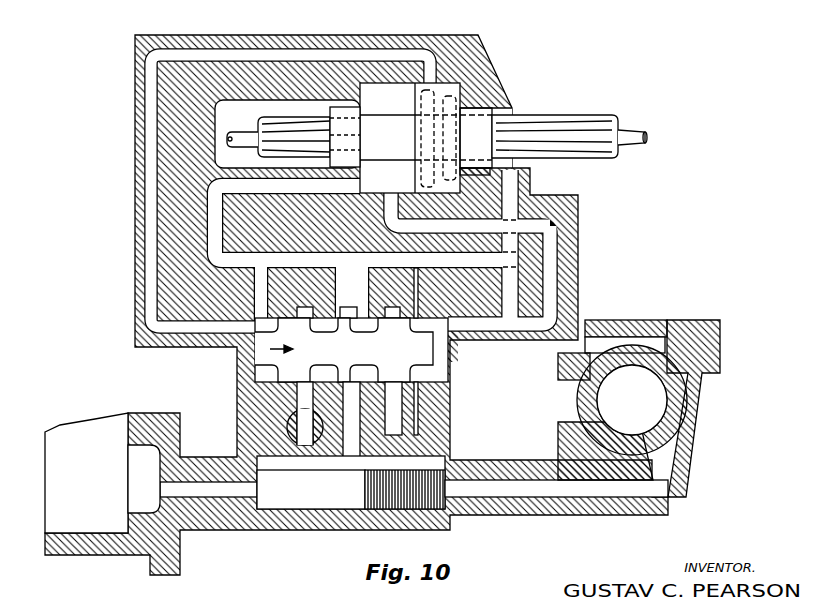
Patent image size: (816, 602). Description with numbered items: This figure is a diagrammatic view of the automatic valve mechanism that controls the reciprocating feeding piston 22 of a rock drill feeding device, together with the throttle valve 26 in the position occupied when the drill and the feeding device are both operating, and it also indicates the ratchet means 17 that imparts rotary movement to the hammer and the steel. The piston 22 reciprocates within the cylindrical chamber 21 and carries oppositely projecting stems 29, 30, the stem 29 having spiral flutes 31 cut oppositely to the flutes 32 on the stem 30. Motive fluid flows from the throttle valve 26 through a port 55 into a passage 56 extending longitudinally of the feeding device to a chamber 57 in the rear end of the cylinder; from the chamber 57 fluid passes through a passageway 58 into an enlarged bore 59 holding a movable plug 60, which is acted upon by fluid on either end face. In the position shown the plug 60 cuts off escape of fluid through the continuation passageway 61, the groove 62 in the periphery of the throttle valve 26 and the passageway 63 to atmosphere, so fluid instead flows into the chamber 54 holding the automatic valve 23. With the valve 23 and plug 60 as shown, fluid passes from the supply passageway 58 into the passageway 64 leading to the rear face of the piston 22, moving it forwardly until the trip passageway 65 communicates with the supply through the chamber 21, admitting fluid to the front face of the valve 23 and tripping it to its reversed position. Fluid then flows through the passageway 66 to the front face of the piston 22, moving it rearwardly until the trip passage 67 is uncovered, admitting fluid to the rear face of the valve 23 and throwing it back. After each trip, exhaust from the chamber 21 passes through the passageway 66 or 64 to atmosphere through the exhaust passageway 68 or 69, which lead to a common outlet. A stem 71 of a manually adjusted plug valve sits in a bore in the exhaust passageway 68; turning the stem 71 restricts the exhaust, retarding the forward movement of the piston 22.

The ratchet means 17 is at (86, 473).
The cylindrical chamber 21 is at (410, 138).
The piston 22 is at (447, 86).
The automatic valve 23 is at (260, 349).
The throttle valve 26 is at (672, 410).
The stem 29 is at (298, 120).
The stem 30 is at (505, 118).
The flutes 31 is at (268, 137).
The flutes 32 is at (622, 142).
The chamber 54 is at (458, 358).
The port 55 is at (590, 404).
The passage 56 is at (568, 393).
The chamber 57 is at (133, 513).
The passageway 58 is at (233, 493).
The enlarged bore 59 is at (317, 497).
The movable plug 60 is at (437, 505).
The passageway 61 is at (592, 498).
The groove 62 is at (668, 365).
The passageway 63 is at (612, 338).
The passageway 64 is at (512, 212).
The trip passageway 65 is at (300, 52).
The passageway 66 is at (214, 213).
The trip passage 67 is at (556, 262).
The exhaust passageway 68 is at (265, 394).
The exhaust passageway 69 is at (395, 410).
The stem 71 is at (280, 432).